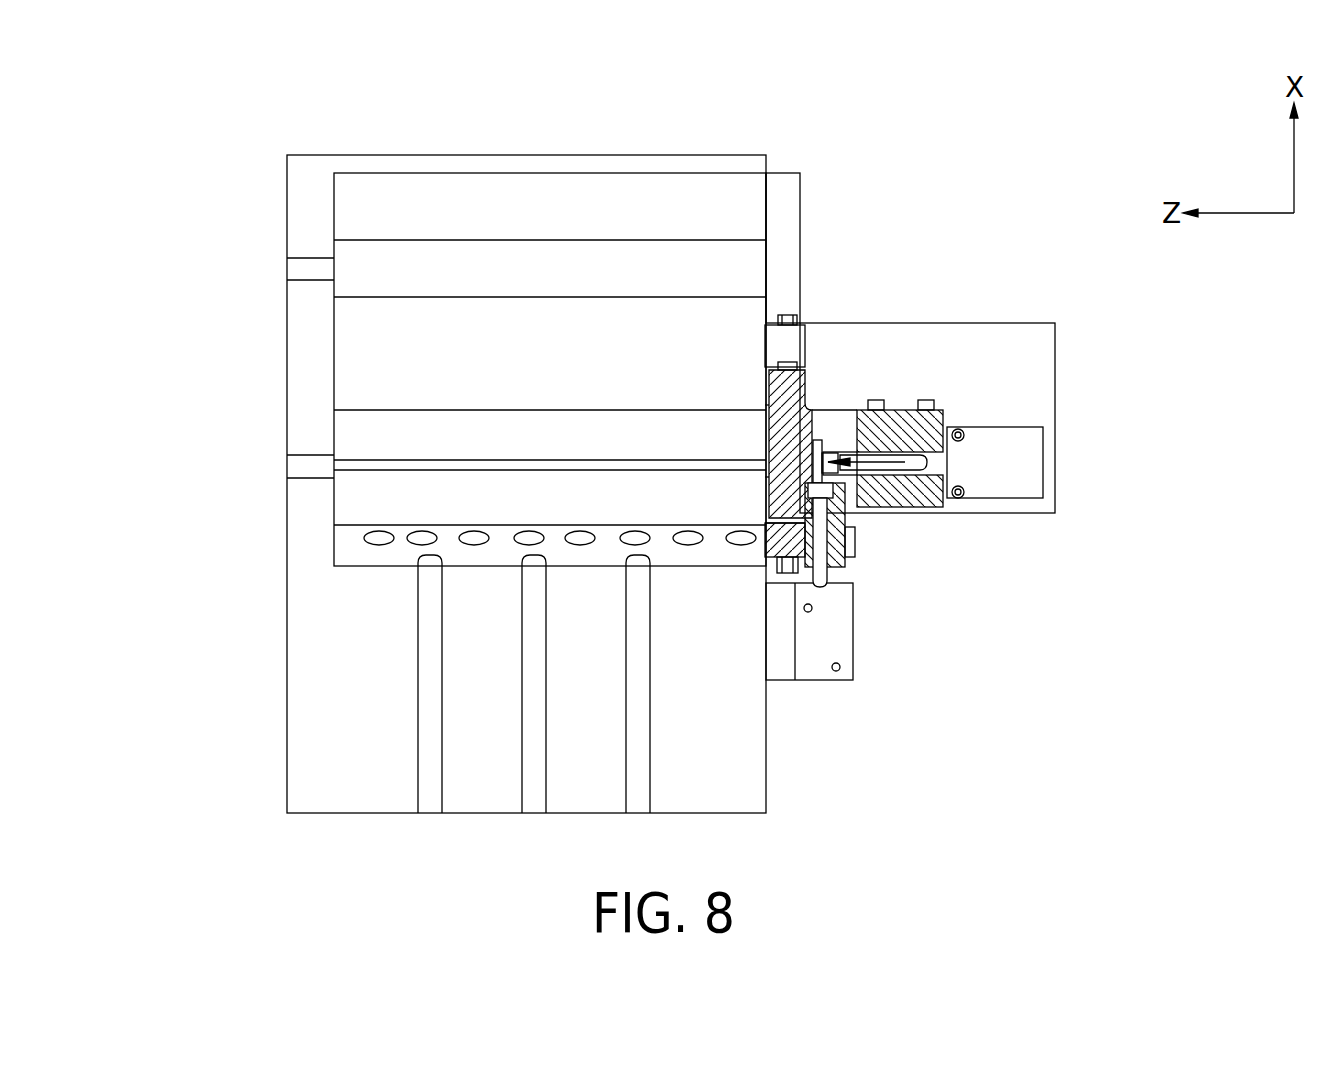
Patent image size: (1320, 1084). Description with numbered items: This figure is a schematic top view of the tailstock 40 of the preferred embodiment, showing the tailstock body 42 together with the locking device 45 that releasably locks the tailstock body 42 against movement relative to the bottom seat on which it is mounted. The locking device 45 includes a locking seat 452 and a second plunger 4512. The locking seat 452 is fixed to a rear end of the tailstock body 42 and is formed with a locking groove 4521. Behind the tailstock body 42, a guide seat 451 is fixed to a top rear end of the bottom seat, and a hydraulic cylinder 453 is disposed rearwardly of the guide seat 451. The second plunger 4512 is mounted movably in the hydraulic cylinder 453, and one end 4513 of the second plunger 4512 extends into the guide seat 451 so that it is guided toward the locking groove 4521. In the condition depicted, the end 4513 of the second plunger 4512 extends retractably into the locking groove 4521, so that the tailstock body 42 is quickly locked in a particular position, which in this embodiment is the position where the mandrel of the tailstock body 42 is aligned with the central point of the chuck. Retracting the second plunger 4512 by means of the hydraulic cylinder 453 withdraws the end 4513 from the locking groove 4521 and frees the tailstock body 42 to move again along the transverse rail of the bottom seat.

The tailstock 40 is at (250, 664).
The tailstock body 42 is at (352, 362).
The locking device 45 is at (988, 323).
The guide seat 451 is at (940, 423).
The second plunger 4512 is at (888, 478).
The end of the second plunger 4513 is at (845, 500).
The locking seat 452 is at (813, 385).
The locking groove 4521 is at (838, 450).
The hydraulic cylinder 453 is at (1018, 487).